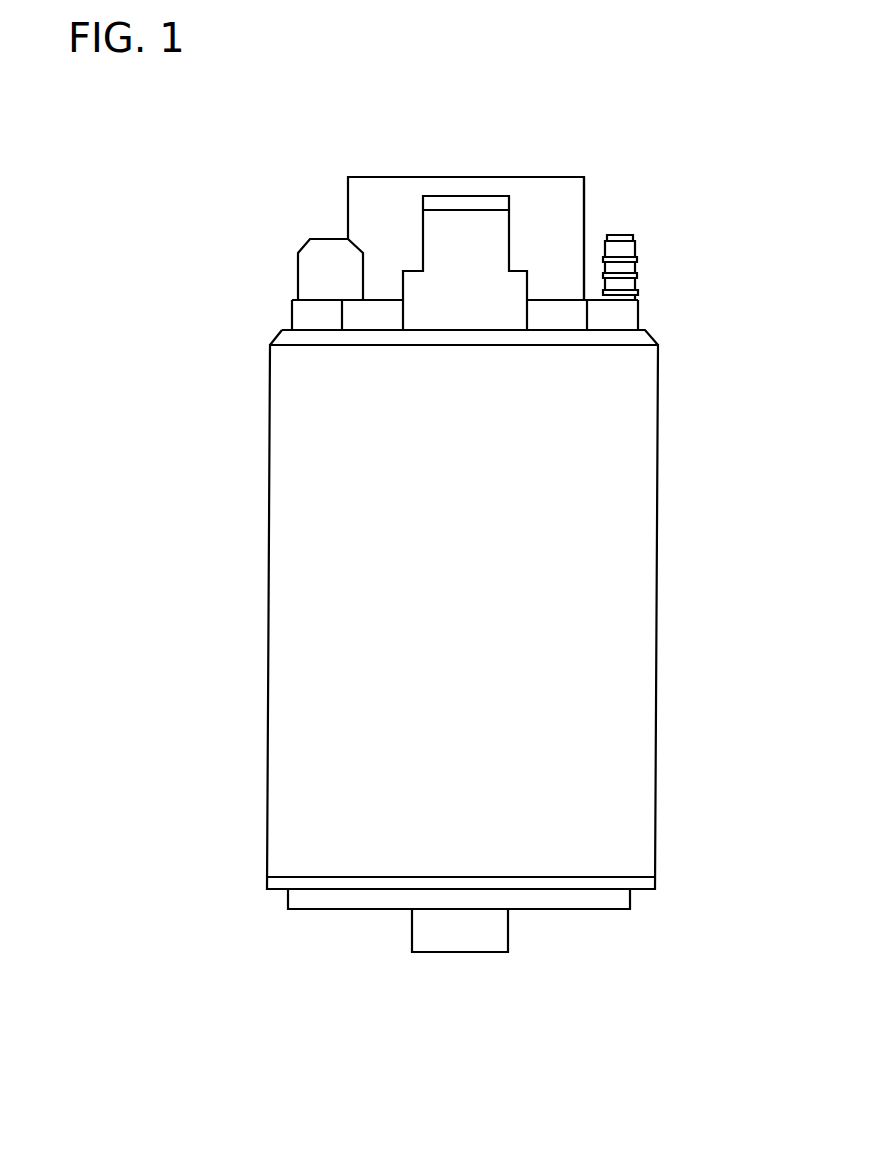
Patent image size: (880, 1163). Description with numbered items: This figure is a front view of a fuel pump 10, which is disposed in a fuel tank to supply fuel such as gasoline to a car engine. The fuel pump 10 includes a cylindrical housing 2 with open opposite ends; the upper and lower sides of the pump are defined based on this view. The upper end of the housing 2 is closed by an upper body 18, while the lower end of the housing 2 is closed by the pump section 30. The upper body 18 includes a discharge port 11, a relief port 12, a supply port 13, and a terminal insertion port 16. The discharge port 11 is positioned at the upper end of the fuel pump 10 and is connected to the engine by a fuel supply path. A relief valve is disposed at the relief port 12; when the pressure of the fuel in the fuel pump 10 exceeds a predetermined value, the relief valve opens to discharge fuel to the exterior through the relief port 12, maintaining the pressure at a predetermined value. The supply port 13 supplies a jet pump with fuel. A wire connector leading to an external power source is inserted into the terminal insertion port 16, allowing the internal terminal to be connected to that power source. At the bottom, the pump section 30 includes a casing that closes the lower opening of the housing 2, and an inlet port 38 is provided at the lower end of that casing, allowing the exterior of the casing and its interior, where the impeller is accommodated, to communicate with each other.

The fuel pump 10 is at (473, 63).
The housing 2 is at (635, 595).
The upper body 18 is at (382, 177).
The terminal insertion port 16 is at (548, 198).
The discharge port 11 is at (437, 203).
The relief port 12 is at (321, 247).
The supply port 13 is at (628, 250).
The pump section 30 is at (287, 898).
The inlet port 38 is at (482, 935).